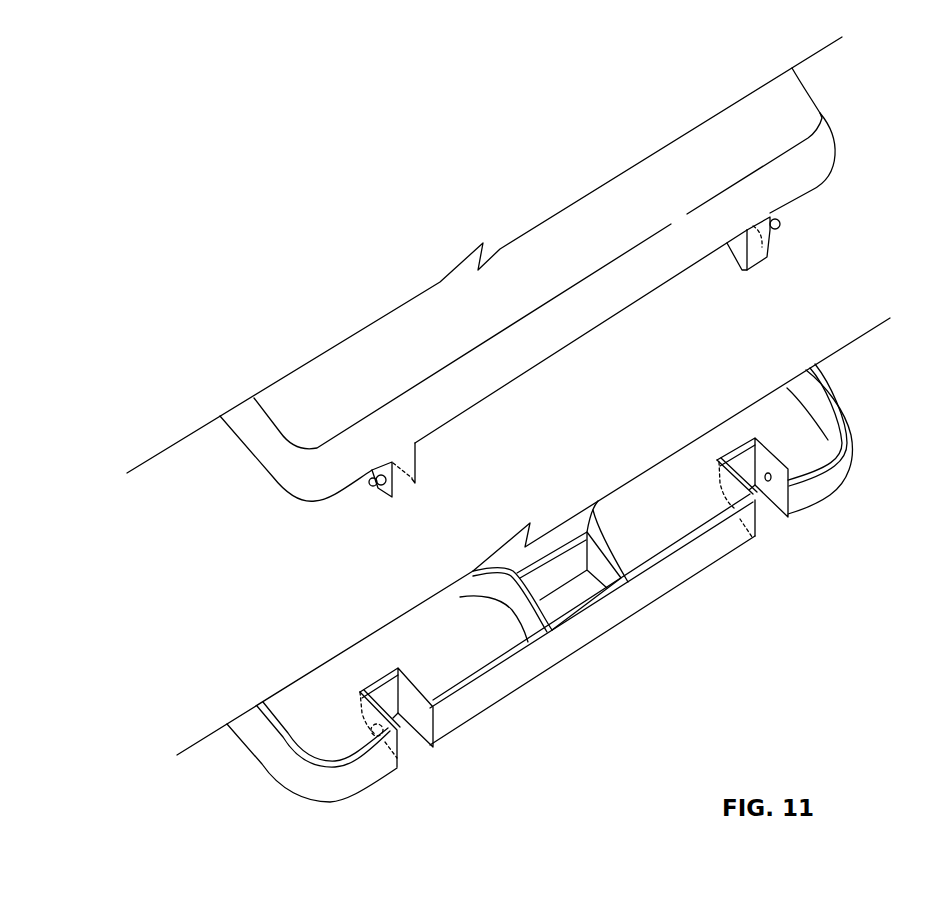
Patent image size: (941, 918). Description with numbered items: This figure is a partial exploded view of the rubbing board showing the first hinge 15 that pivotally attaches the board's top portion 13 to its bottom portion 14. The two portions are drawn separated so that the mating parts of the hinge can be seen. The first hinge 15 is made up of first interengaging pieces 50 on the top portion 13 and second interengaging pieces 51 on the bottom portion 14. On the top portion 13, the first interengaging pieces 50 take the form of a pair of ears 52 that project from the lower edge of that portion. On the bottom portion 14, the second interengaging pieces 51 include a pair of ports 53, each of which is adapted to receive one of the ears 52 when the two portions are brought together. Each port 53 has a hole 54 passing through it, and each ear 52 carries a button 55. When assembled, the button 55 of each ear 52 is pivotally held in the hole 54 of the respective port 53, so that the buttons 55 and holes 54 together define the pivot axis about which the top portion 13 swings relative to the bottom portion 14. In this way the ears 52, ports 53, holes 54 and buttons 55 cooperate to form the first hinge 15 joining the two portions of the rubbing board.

The top portion 13 is at (484, 269).
The bottom portion 14 is at (613, 632).
The first hinge 15 is at (142, 507).
The first interengaging pieces 50 is at (380, 501).
The second interengaging pieces 51 is at (434, 774).
The ear 52 is at (400, 487).
The port 53 is at (383, 673).
The hole 54 is at (400, 738).
The button 55 is at (373, 470).